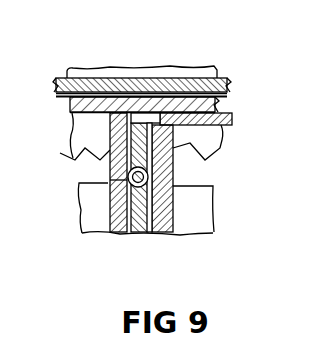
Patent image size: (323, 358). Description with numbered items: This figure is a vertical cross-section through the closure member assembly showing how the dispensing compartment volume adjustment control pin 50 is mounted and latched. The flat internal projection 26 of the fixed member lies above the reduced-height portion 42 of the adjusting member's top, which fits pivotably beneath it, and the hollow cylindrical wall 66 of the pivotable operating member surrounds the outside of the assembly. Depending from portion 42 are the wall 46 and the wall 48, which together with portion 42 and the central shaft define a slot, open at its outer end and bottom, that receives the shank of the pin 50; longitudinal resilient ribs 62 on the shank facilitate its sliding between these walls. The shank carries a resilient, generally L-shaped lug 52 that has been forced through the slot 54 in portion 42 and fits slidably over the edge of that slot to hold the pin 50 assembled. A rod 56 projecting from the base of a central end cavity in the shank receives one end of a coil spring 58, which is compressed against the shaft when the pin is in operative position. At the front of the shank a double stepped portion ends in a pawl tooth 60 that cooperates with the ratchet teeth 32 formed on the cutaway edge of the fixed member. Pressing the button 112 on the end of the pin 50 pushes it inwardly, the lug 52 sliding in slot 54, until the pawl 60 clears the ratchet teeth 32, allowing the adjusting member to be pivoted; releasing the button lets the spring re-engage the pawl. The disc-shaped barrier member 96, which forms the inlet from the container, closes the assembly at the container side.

The flat internal projection 26 is at (218, 80).
The barrier member 96 is at (85, 78).
The slot 54 is at (157, 95).
The resilient L-shaped lug 52 is at (108, 115).
The portion of top 42 is at (228, 117).
The rod 56 is at (108, 179).
The wall 48 is at (173, 200).
The dispensing compartment volume adjustment control pin 50 is at (171, 218).
The button 112 is at (152, 110).
The longitudinal resilient ribs 62 is at (146, 233).
The ratchet teeth 32 is at (60, 153).
The hollow cylindrical wall 66 is at (90, 192).
The depending wall 46 is at (110, 200).
The pawl tooth 60 is at (175, 138).
The coil spring 58 is at (193, 199).